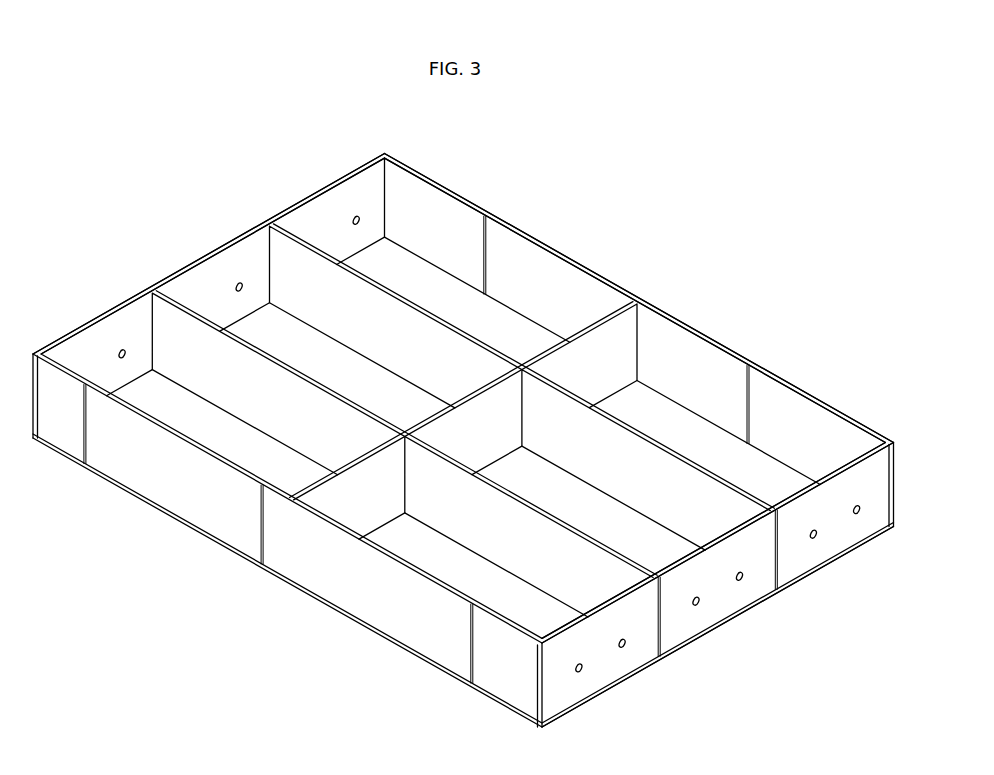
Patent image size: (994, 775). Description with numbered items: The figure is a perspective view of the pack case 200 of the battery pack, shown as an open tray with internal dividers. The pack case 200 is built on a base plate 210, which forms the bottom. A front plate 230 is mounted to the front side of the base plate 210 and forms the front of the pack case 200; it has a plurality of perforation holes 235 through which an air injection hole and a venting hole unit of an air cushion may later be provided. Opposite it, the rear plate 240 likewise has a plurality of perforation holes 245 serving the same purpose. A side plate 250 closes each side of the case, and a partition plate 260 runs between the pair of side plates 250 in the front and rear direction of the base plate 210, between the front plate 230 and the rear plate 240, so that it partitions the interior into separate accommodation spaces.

The pack case 200 is at (686, 229).
The base plate 210 is at (773, 484).
The front plate 230 is at (876, 476).
The perforation holes 235 is at (857, 511).
The rear plate 240 is at (372, 178).
The perforation holes 245 is at (350, 221).
The side plate 250 is at (780, 377).
The partition plate 260 is at (621, 337).